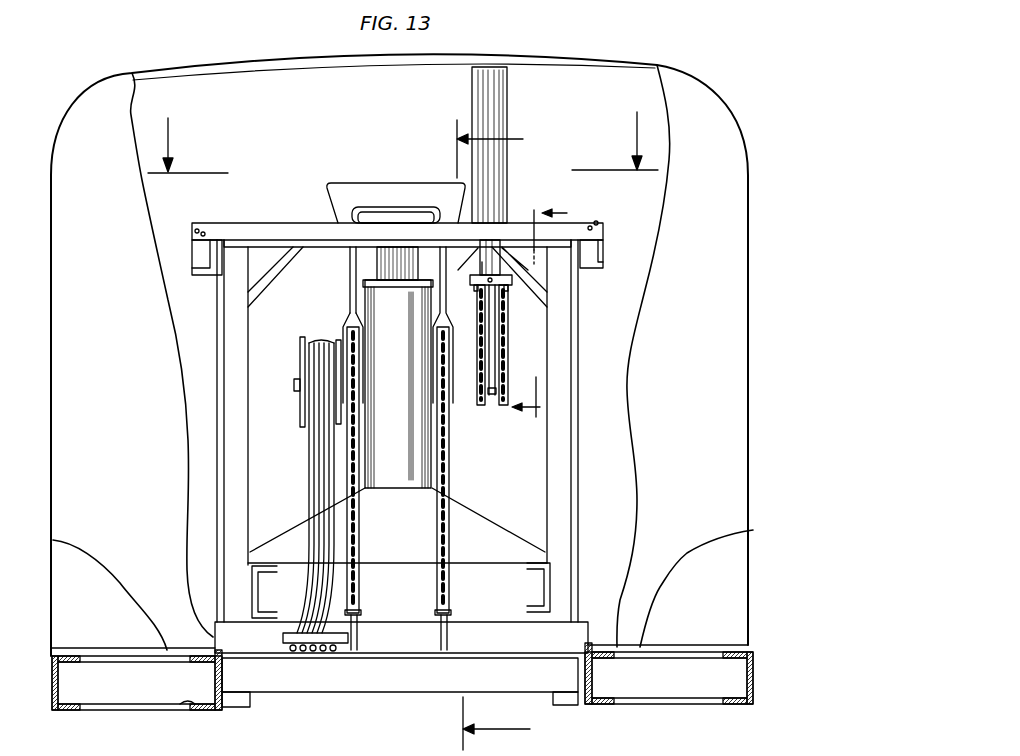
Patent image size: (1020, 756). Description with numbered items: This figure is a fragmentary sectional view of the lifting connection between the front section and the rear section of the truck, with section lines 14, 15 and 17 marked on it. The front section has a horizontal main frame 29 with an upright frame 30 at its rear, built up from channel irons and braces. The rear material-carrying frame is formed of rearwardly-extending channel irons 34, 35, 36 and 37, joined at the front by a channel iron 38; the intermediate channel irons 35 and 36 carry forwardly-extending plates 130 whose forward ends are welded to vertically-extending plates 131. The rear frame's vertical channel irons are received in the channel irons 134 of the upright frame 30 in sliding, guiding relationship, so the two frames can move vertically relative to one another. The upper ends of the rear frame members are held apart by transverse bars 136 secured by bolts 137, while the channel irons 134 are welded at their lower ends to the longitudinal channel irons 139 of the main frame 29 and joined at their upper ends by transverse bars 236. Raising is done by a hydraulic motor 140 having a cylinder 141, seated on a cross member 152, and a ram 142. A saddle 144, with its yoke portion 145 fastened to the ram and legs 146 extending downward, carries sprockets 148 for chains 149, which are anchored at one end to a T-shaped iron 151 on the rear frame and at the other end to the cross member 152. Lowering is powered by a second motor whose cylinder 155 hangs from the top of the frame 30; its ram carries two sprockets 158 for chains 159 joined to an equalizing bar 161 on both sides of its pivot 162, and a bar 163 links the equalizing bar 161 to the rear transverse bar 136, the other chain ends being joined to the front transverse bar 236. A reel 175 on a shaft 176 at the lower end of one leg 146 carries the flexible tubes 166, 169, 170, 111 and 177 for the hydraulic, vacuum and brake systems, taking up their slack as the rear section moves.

The section line 14- 14 is at (403, 131).
The section line 15- 15 is at (512, 435).
The section line 17- 17 is at (556, 319).
The main frame 29 is at (418, 690).
The upright frame 30 is at (217, 345).
The channel iron 34 is at (57, 712).
The channel iron 35 is at (188, 700).
The channel iron 36 is at (603, 704).
The channel iron 37 is at (737, 700).
The channel iron 38 is at (660, 688).
The flexible tube 111 is at (307, 452).
The forwardly-extending plate 130 is at (187, 600).
The vertically-extending plate 131 is at (222, 504).
The channel iron 134 is at (224, 438).
The transverse bar 136 is at (284, 224).
The bolt 137 is at (200, 228).
The channel iron 139 is at (258, 583).
The hydraulic motor 140 is at (418, 453).
The cylinder 141 is at (415, 476).
The ram 142 is at (377, 262).
The saddle 144 is at (350, 288).
The yoke portion 145 is at (382, 207).
The leg 146 is at (350, 311).
The sprocket 148 is at (452, 340).
The chain 149 is at (455, 428).
The T-shaped iron 151 is at (317, 683).
The cross member 152 is at (508, 532).
The cylinder 155 is at (492, 88).
The sprocket 158 is at (505, 395).
The chain 159 is at (508, 318).
The equalizing bar 161 is at (512, 280).
The pivot 162 is at (490, 277).
The bar 163 is at (487, 243).
The flexible tube 166 is at (317, 470).
The flexible tube 169 is at (323, 488).
The flexible tube 170 is at (327, 499).
The reel 175 is at (300, 347).
The shaft 176 is at (297, 385).
The flexible tube 177 is at (333, 510).
The transverse bar 236 is at (312, 246).